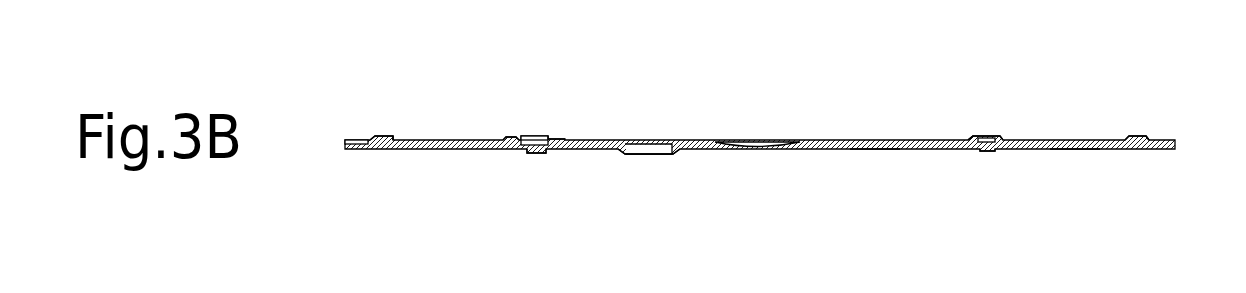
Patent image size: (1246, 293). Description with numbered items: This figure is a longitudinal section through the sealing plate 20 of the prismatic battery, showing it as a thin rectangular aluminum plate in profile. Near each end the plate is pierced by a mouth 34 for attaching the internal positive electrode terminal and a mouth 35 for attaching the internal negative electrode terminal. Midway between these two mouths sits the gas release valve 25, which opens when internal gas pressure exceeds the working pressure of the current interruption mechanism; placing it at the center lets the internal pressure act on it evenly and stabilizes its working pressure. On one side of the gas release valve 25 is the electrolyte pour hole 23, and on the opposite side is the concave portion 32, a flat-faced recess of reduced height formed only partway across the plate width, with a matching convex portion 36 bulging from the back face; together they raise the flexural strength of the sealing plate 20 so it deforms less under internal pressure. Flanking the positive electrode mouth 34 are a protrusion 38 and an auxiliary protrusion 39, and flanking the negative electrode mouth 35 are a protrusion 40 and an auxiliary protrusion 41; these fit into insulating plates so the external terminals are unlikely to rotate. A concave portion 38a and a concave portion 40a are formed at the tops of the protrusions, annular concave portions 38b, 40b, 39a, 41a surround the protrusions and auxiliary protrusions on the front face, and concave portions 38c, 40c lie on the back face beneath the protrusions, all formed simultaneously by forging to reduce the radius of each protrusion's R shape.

The sealing plate 20 is at (828, 140).
The electrolyte pour hole 23 is at (878, 150).
The gas release valve 25 is at (735, 140).
The concave portion 32 is at (645, 140).
The mouth for attaching the internal positive electrode terminal 34 is at (1070, 150).
The mouth for attaching the internal negative electrode terminal 35 is at (448, 150).
The convex portion 36 is at (653, 154).
The protrusion 38 is at (1002, 137).
The concave portion at the top of the protrusion 38a is at (998, 135).
The annular concave portion 38b is at (959, 141).
The concave portion on the back face 38c is at (990, 152).
The auxiliary protrusion 39 is at (1132, 135).
The annular concave portion 39a is at (1149, 138).
The protrusion 40 is at (509, 136).
The concave portion at the top of the protrusion 40a is at (522, 135).
The annular concave portion 40b is at (544, 136).
The concave portion on the back face 40c is at (536, 154).
The auxiliary protrusion 41 is at (378, 134).
The annular concave portion 41a is at (397, 134).